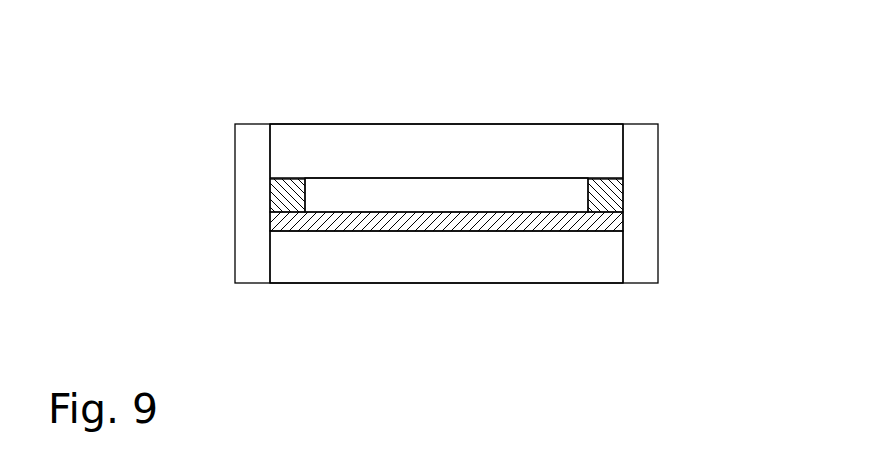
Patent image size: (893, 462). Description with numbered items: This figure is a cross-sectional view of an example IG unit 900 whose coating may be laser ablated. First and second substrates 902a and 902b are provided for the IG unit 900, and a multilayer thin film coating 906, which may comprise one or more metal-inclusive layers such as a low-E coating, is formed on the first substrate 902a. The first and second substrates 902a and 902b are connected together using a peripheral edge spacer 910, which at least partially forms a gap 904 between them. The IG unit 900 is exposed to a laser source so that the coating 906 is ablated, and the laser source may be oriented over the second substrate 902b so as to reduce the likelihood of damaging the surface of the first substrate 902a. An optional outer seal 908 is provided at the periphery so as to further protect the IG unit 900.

The IG unit 900 is at (566, 89).
The first substrate 902a is at (607, 257).
The second substrate 902b is at (605, 152).
The gap 904 is at (473, 207).
The multilayer thin film coating 906 is at (622, 218).
The outer seal 908 is at (252, 284).
The peripheral edge spacer 910 is at (283, 193).